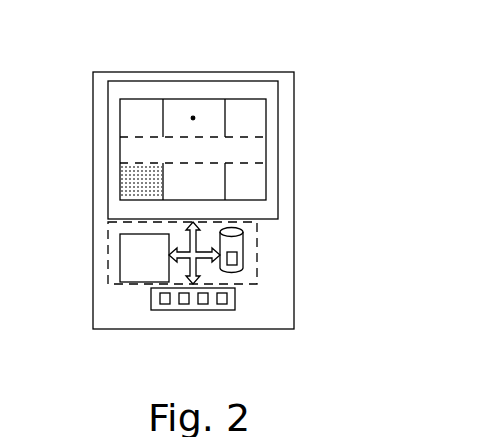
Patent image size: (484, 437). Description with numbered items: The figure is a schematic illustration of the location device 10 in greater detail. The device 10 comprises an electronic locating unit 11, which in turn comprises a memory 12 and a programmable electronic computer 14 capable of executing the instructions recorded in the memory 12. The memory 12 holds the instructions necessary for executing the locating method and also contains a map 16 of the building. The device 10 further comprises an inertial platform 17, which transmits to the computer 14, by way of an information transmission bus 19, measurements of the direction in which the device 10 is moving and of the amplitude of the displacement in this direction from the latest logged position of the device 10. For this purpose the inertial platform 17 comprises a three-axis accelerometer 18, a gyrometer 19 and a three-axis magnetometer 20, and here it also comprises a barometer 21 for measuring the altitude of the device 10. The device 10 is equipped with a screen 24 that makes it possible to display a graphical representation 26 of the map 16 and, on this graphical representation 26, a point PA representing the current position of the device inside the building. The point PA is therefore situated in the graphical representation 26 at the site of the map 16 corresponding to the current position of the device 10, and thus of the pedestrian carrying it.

The device 10 is at (86, 58).
The point PA is at (193, 118).
The screen 24 is at (288, 87).
The graphical representation 26 is at (276, 116).
The electronic locating unit 11 is at (267, 232).
The memory 12 is at (255, 256).
The programmable electronic computer 14 is at (110, 258).
The map 16 is at (238, 258).
The inertial platform 17 is at (141, 298).
The three-axis accelerometer 18 is at (164, 306).
The information transmission bus 19 is at (183, 306).
The three-axis magnetometer 20 is at (205, 307).
The barometer 21 is at (223, 306).